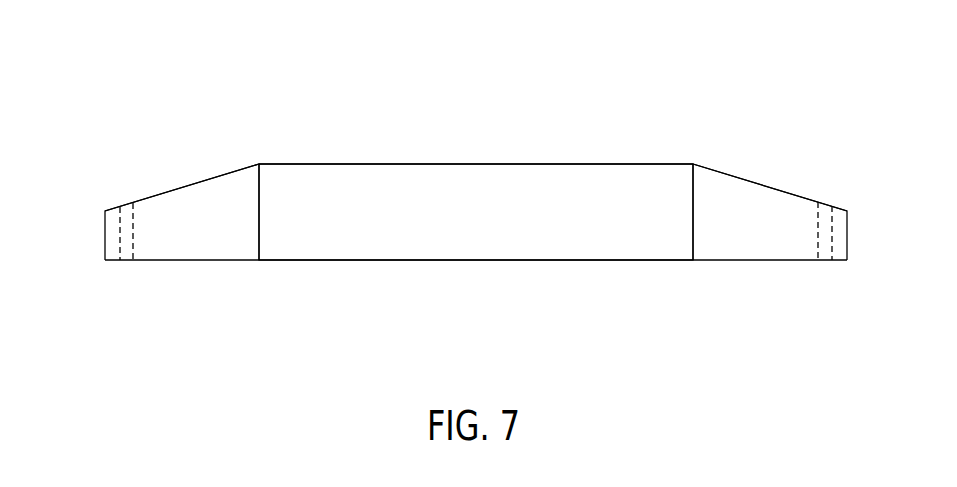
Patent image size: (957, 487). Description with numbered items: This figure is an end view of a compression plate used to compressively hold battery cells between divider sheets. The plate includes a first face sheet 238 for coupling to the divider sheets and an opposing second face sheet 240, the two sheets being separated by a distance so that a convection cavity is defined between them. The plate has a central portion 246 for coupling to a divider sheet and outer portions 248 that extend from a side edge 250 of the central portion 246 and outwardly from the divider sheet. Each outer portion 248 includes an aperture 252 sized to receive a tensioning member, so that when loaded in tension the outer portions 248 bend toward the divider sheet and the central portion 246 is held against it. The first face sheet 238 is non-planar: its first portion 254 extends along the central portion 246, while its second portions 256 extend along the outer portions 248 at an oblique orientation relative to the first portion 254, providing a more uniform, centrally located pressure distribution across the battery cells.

The first face sheet 238 is at (500, 164).
The second face sheet 240 is at (527, 262).
The central portion 246 is at (419, 104).
The outer portion 248 is at (176, 155).
The side edge 250 is at (258, 195).
The aperture 252 is at (120, 224).
The first portion 254 is at (373, 164).
The second portion 256 is at (147, 197).